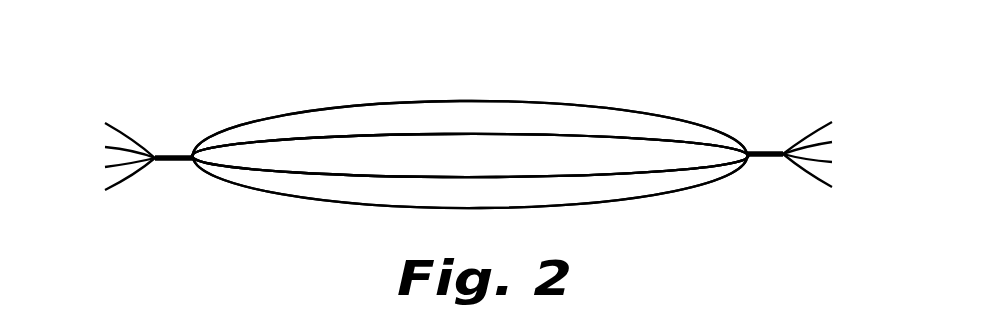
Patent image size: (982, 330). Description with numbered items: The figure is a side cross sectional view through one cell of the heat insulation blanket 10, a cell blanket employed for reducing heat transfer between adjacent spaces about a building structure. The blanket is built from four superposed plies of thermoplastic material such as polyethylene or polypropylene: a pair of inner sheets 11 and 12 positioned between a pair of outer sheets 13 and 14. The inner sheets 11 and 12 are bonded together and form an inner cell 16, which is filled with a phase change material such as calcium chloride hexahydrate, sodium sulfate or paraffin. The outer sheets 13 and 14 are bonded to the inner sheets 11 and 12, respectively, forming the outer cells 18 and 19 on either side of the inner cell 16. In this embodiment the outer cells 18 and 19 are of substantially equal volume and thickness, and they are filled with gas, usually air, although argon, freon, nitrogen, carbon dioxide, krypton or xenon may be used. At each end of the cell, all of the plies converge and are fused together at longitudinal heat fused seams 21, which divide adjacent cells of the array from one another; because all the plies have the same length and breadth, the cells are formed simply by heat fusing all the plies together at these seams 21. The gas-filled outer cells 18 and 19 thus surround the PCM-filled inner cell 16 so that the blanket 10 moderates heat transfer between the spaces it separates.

The heat insulation blanket 10 is at (685, 90).
The inner sheet 11 is at (298, 137).
The inner sheet 12 is at (360, 177).
The outer sheet 13 is at (418, 101).
The outer sheet 14 is at (520, 206).
The inner cell 16 is at (445, 168).
The outer cell 18 is at (465, 206).
The outer cell 19 is at (475, 131).
The longitudinal heat fused seam 21 is at (172, 153).